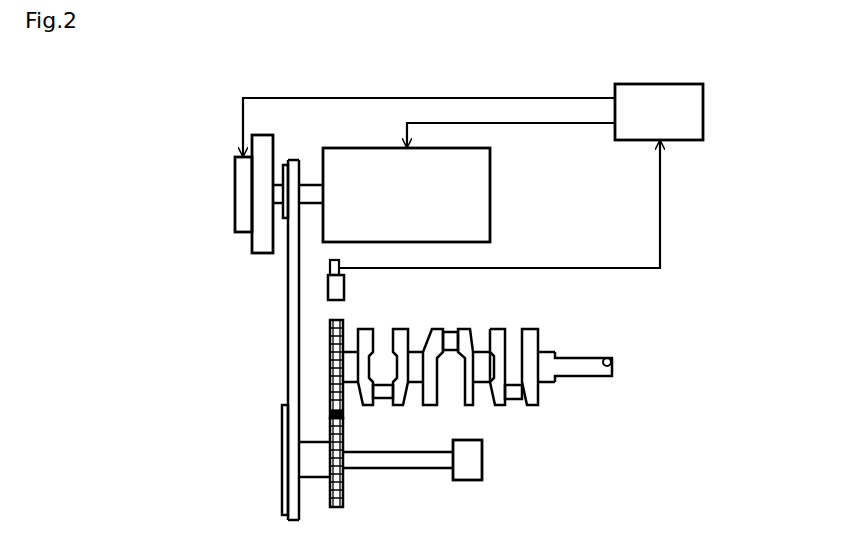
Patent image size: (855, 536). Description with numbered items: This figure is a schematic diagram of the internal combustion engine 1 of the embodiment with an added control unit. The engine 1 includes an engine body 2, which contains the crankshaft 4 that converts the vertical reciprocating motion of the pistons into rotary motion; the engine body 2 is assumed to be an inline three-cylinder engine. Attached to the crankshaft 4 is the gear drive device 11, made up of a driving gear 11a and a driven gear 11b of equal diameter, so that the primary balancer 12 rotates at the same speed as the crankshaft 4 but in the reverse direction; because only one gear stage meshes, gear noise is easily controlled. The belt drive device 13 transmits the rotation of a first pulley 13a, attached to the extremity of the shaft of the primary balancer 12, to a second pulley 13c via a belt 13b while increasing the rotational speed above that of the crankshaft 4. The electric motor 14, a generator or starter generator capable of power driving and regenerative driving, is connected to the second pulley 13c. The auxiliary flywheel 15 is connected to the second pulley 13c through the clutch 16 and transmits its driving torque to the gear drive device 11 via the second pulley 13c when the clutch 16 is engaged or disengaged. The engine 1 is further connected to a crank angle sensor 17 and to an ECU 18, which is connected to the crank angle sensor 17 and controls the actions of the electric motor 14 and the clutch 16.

The engine 1 is at (690, 227).
The engine body 2 is at (491, 291).
The crankshaft 4 is at (568, 360).
The gear drive device 11 is at (386, 417).
The driving gear 11a is at (345, 435).
The driven gear 11b is at (344, 493).
The primary balancer 12 is at (481, 460).
The belt drive device 13 is at (262, 316).
The first pulley 13a is at (284, 407).
The belt 13b is at (287, 327).
The second pulley 13c is at (300, 166).
The electric motor 14 is at (492, 194).
The auxiliary flywheel 15 is at (262, 253).
The clutch 16 is at (236, 158).
The crank angle sensor 17 is at (339, 293).
The ECU 18 is at (697, 114).